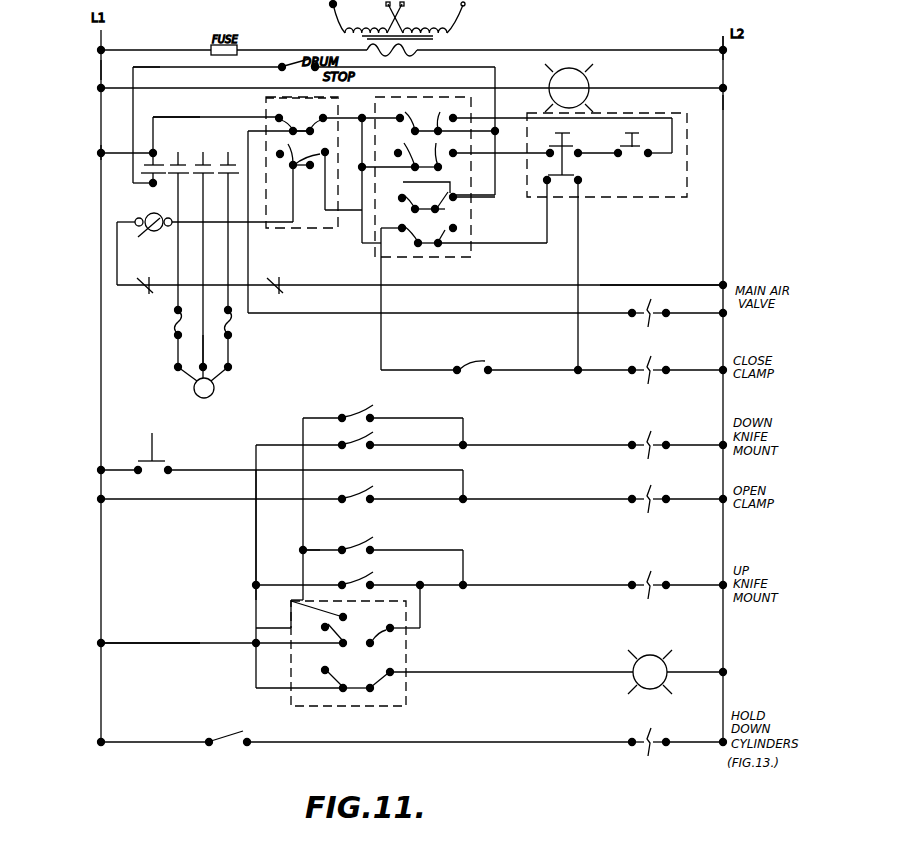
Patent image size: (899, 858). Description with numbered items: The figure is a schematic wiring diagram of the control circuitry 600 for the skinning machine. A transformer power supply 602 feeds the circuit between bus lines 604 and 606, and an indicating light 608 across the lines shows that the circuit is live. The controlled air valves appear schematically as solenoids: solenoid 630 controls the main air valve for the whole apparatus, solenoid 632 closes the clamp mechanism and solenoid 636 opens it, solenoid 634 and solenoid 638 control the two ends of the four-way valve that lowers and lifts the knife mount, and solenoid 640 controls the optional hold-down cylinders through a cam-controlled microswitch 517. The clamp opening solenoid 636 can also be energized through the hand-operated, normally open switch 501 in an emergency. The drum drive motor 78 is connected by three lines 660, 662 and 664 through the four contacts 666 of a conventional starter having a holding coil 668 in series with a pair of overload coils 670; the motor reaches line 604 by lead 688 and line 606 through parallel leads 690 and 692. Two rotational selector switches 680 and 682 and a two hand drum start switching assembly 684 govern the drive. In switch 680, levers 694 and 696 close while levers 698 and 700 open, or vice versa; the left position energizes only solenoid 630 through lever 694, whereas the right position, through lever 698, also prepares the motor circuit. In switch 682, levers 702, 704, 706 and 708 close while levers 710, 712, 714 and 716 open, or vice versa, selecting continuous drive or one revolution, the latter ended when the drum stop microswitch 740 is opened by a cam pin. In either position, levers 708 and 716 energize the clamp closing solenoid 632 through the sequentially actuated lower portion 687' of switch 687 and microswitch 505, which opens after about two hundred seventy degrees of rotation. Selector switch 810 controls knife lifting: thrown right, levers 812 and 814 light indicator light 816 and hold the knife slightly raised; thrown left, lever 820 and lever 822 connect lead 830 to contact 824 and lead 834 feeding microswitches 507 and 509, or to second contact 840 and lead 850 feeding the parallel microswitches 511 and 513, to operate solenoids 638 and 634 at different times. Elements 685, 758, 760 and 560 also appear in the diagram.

The control circuitry 600 is at (728, 101).
The transformer power supply 602 is at (440, 43).
The bus line 604 is at (100, 68).
The bus line 606 is at (727, 44).
The indicating light 608 is at (570, 69).
The main air valve solenoid 630 is at (653, 318).
The clamp closing solenoid 632 is at (655, 365).
The knife lifting solenoid 634 is at (650, 433).
The clamp opening solenoid 636 is at (652, 490).
The knife mount lifting solenoid 638 is at (650, 575).
The hold-down cylinder solenoid 640 is at (652, 730).
The motor line 660 is at (178, 350).
The motor line 662 is at (205, 350).
The motor line 664 is at (230, 343).
The starter switch contacts 666 is at (231, 176).
The holding coil 668 is at (151, 234).
The overload coils 670 is at (267, 292).
The selector switch 680 is at (270, 97).
The selector switch 682 is at (437, 97).
The two hand drum start switching assembly 684 is at (642, 111).
The start pushbutton 685 is at (640, 146).
The switch 687 is at (576, 149).
The lower portion of switch 687' is at (582, 174).
The lead 688 is at (101, 150).
The lead 690 is at (147, 65).
The lead 692 is at (190, 102).
The switch lever 694 is at (287, 110).
The switch lever 696 is at (286, 146).
The switch lever 698 is at (318, 113).
The switch lever 700 is at (294, 166).
The switch lever 702 is at (407, 116).
The switch lever 704 is at (411, 148).
The switch lever 706 is at (410, 191).
The switch lever 708 is at (408, 232).
The switch lever 710 is at (445, 115).
The switch lever 712 is at (447, 150).
The switch lever 714 is at (438, 209).
The switch lever 716 is at (441, 236).
The drum stop microswitch 740 is at (295, 65).
The drum switch contact 758 is at (430, 183).
The control conductor 760 is at (650, 266).
The drum drive motor 78 is at (215, 389).
The hand-operated normally open switch 501 is at (157, 442).
The microswitch 505 is at (473, 367).
The microswitch 507 is at (370, 567).
The microswitch 509 is at (370, 431).
The microswitch 511 is at (370, 530).
The microswitch 513 is at (356, 413).
The microswitch 517 is at (223, 733).
The limit switch 560 is at (370, 485).
The selector switch 810 is at (286, 607).
The switch lever 812 is at (380, 679).
The switch lever 814 is at (373, 626).
The indicator light 816 is at (697, 632).
The switch lever 820 is at (332, 692).
The switch lever 822 is at (372, 643).
The contact 824 is at (325, 627).
The lead 830 is at (155, 618).
The lead 834 is at (256, 543).
The second contact 840 is at (345, 616).
The lead 850 is at (303, 533).